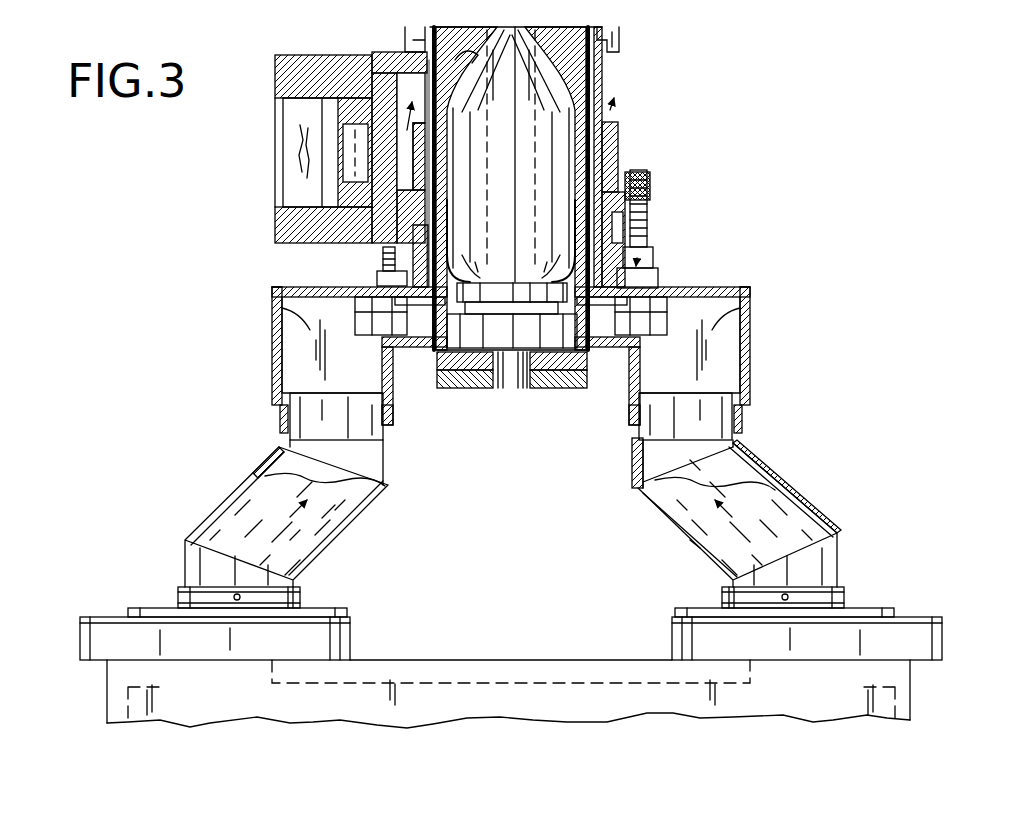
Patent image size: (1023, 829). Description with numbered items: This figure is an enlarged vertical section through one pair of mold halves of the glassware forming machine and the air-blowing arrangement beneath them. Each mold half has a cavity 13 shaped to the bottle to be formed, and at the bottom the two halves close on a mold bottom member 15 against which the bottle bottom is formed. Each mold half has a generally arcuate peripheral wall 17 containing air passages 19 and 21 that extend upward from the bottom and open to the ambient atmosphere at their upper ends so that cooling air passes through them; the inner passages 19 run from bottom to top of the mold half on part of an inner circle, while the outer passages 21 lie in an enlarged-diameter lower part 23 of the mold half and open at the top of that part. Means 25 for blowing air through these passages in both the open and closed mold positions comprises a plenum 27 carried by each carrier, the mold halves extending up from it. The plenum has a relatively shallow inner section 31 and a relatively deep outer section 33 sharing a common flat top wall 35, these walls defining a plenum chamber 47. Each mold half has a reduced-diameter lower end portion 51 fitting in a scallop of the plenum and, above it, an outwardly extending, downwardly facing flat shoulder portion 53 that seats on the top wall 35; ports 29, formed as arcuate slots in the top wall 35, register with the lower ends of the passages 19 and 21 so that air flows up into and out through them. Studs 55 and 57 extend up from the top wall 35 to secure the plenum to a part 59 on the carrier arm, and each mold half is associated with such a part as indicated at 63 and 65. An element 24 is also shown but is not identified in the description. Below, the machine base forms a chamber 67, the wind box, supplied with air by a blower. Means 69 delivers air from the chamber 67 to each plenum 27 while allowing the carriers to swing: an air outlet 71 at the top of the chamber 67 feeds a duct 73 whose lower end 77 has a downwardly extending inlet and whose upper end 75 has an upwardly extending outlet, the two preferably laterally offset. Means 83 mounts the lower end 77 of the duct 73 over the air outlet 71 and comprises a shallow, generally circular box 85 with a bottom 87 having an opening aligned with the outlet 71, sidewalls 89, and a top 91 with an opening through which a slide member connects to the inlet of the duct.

The cavity 13 is at (473, 62).
The mold bottom member 15 is at (472, 278).
The arcuate peripheral wall 17 is at (447, 113).
The inner air passages 19 is at (447, 180).
The outer air passages 21 is at (657, 147).
The enlarged-diameter lower part 23 is at (400, 143).
The spacer plate 24 is at (428, 305).
The means for blowing air 25 is at (511, 500).
The plenum 27 is at (270, 286).
The ports 29 is at (511, 316).
The shallow inner section 31 is at (511, 381).
The deep outer section 33 is at (272, 357).
The top wall 35 is at (308, 287).
The plenum chamber 47 is at (300, 340).
The reduced-diameter lower end portion 51 is at (382, 445).
The shoulder portion 53 is at (465, 256).
The stud 55 is at (380, 262).
The stud 57 is at (646, 240).
The carrier arm part 59 is at (425, 58).
The mold half association 63 is at (395, 180).
The mold half association 65 is at (408, 33).
The chamber 67 is at (508, 694).
The air delivery means 69 is at (215, 503).
The air outlet 71 is at (222, 628).
The duct 73 is at (345, 537).
The upper end of duct 75 is at (388, 440).
The lower end of duct 77 is at (185, 570).
The mounting means 83 is at (332, 601).
The shallow box 85 is at (268, 416).
The box bottom 87 is at (318, 393).
The box sidewalls 89 is at (340, 642).
The box top 91 is at (347, 611).